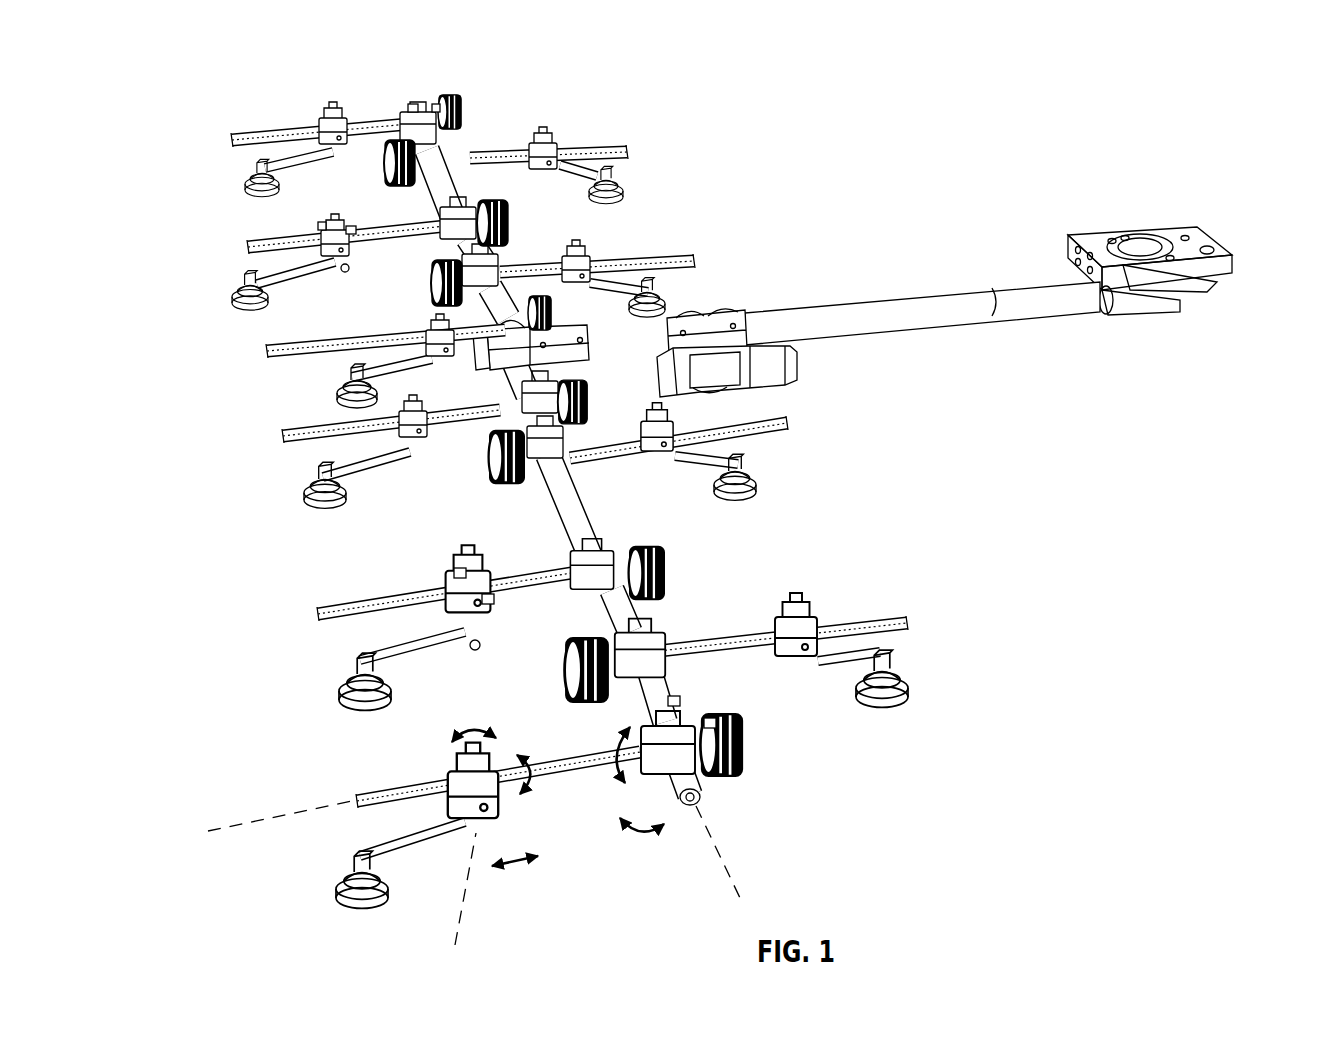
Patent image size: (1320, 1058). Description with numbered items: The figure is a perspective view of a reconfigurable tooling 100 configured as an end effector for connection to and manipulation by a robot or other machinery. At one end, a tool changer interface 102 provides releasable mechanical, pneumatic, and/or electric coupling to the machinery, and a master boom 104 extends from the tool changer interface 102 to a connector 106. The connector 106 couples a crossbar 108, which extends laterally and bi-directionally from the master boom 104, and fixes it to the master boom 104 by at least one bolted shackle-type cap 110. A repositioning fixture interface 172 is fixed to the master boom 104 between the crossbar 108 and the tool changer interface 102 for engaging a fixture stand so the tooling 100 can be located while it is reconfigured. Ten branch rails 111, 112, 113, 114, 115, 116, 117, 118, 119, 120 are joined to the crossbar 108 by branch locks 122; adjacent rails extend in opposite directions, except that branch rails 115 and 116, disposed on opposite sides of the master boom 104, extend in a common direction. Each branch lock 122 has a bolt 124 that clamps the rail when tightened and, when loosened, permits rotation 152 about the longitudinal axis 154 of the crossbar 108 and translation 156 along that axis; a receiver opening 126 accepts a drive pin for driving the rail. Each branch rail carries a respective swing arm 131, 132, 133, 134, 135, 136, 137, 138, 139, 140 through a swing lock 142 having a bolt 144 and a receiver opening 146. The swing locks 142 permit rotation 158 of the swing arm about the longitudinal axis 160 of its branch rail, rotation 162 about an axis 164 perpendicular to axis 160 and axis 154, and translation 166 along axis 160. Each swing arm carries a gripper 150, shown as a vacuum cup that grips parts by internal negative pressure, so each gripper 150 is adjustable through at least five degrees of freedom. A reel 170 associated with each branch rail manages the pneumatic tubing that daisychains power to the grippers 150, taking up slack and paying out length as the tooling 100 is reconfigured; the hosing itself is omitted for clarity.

The tooling 100 is at (1047, 150).
The tool changer interface 102 is at (1178, 233).
The master boom 104 is at (918, 296).
The connector 106 is at (490, 462).
The crossbar 108 is at (568, 522).
The shackle-type cap 110 is at (500, 362).
The branch rail 111 is at (290, 133).
The branch rail 112 is at (613, 145).
The branch rail 113 is at (265, 240).
The branch rail 114 is at (680, 257).
The branch rail 115 is at (352, 337).
The branch rail 116 is at (305, 445).
The branch rail 117 is at (760, 427).
The branch rail 118 is at (348, 602).
The branch rail 119 is at (875, 618).
The branch rail 120 is at (385, 786).
The branch lock 122 is at (450, 138).
The bolt 124 is at (436, 108).
The receiver opening 126 is at (413, 112).
The swing arm 131 is at (282, 170).
The swing arm 132 is at (588, 172).
The swing arm 133 is at (300, 283).
The swing arm 134 is at (630, 300).
The swing arm 135 is at (363, 368).
The swing arm 136 is at (350, 475).
The swing arm 137 is at (712, 470).
The swing arm 138 is at (398, 657).
The swing arm 139 is at (858, 667).
The swing arm 140 is at (392, 858).
The swing lock 142 is at (345, 268).
The bolt 144 is at (352, 230).
The receiver opening 146 is at (322, 228).
The gripper 150 is at (243, 178).
The rotation 152 is at (640, 832).
The longitudinal axis 154 is at (715, 842).
The translation 156 is at (618, 730).
The rotation 158 is at (560, 778).
The longitudinal axis 160 is at (290, 812).
The rotation 162 is at (470, 728).
The axis 164 is at (462, 908).
The translation 166 is at (518, 867).
The reel 170 is at (388, 152).
The repositioning fixture interface 172 is at (800, 372).